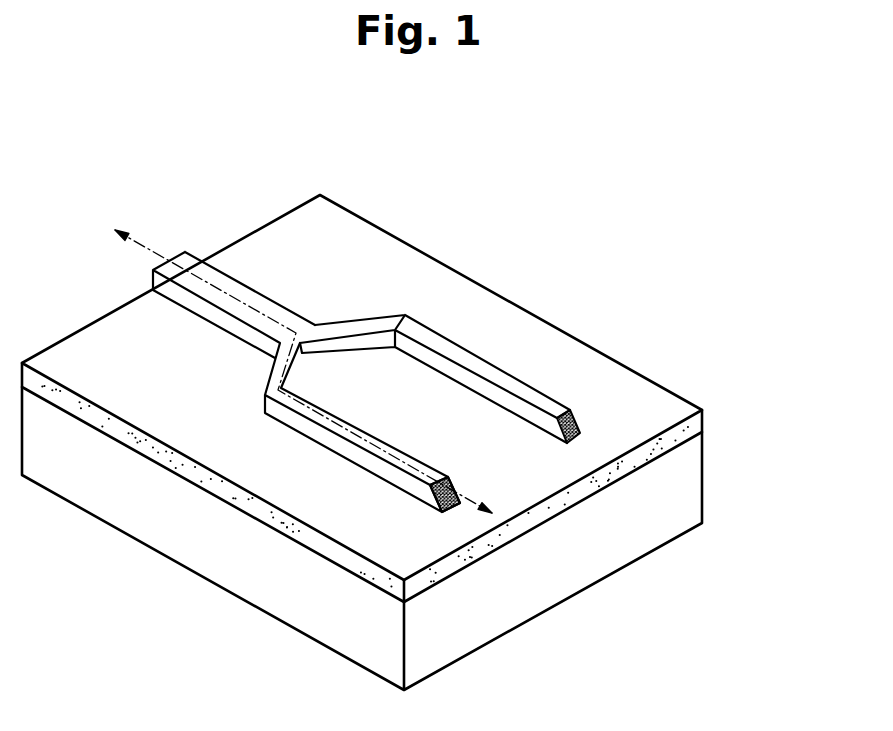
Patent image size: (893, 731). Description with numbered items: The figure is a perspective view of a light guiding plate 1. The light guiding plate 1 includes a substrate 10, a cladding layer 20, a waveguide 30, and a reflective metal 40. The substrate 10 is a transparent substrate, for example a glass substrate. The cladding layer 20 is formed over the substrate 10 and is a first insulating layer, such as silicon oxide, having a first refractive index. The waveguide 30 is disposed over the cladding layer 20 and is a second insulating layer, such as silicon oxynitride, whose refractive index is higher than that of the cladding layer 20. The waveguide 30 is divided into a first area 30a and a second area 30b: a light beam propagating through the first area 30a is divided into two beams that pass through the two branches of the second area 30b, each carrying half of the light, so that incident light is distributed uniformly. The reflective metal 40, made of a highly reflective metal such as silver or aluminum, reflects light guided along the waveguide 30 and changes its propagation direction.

The light guiding plate 1 is at (703, 332).
The substrate 10 is at (690, 484).
The cladding layer 20 is at (700, 420).
The waveguide 30 is at (361, 128).
The first area 30a is at (250, 297).
The second area 30b is at (422, 330).
The reflective metal 40 is at (568, 408).